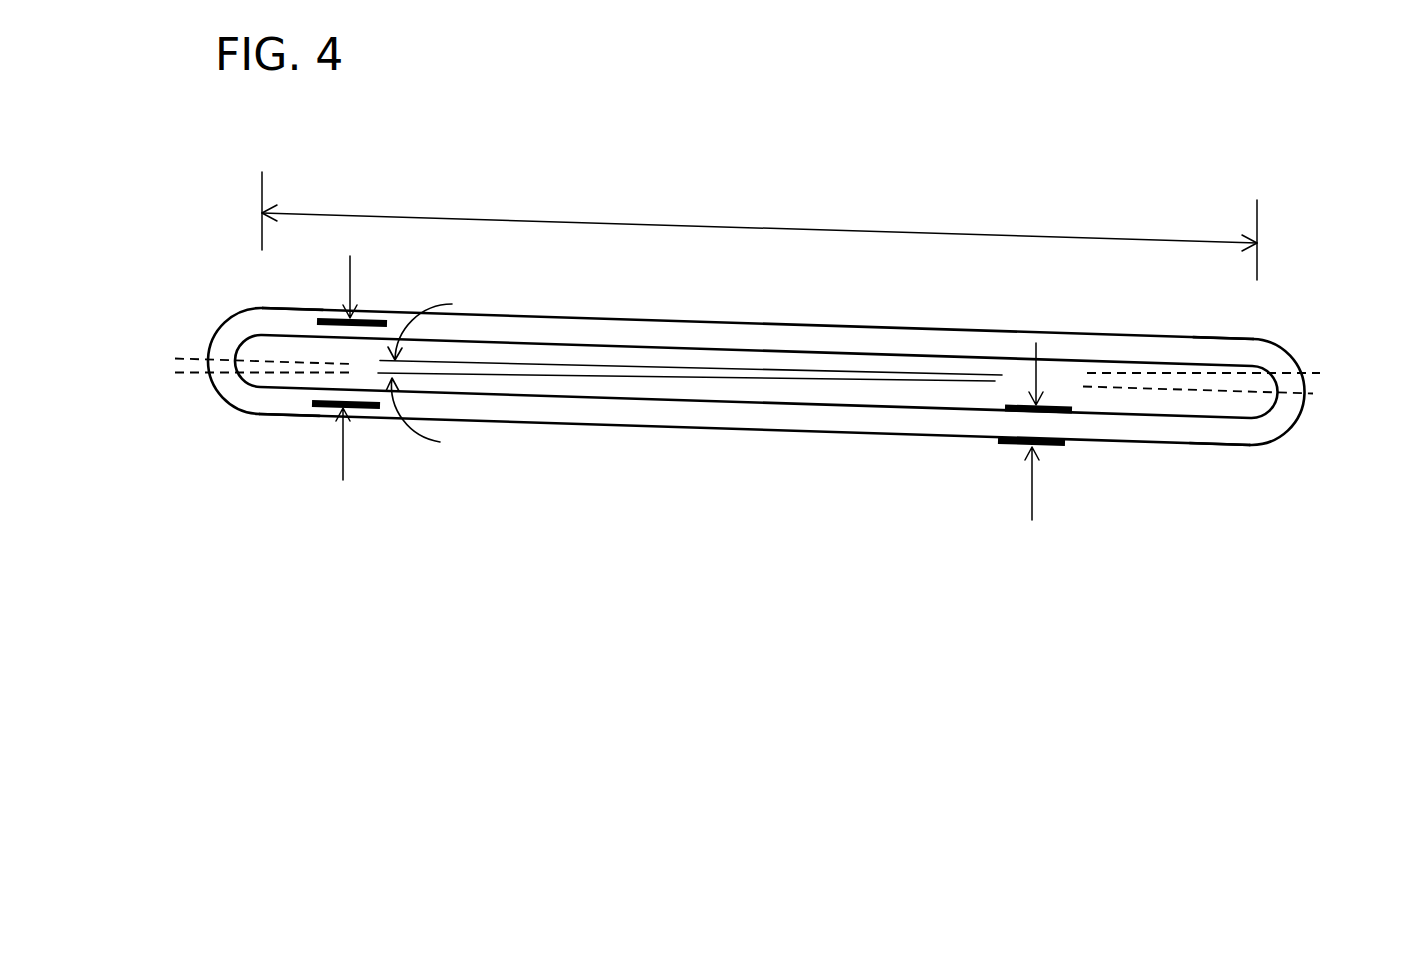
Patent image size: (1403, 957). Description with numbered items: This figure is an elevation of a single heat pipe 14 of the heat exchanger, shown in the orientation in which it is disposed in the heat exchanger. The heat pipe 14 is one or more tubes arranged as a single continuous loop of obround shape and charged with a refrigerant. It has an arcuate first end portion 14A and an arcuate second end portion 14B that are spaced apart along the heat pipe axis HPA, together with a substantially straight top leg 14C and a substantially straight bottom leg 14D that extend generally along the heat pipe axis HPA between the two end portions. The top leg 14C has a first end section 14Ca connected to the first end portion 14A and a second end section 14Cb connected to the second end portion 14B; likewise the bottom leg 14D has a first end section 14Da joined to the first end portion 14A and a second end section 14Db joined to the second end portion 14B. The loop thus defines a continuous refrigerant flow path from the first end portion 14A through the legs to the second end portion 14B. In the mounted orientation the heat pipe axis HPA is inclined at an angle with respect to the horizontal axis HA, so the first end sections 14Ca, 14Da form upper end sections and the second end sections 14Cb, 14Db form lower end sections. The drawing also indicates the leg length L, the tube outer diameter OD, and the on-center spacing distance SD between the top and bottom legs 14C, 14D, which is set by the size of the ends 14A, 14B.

The heat pipe 14 is at (759, 309).
The first end portion 14A is at (233, 317).
The second end portion 14B is at (1281, 440).
The top leg 14C is at (746, 307).
The first end section of top leg 14Ca is at (278, 320).
The second end section of top leg 14Cb is at (1238, 353).
The bottom leg 14D is at (752, 463).
The first end section of bottom leg 14Da is at (278, 403).
The second end section of bottom leg 14Db is at (1237, 433).
The heat pipe axis HPA is at (746, 375).
The horizontal axis HA is at (748, 376).
The length L is at (495, 217).
The on-center spacing distance SD is at (343, 448).
The outer diameter OD is at (1032, 487).